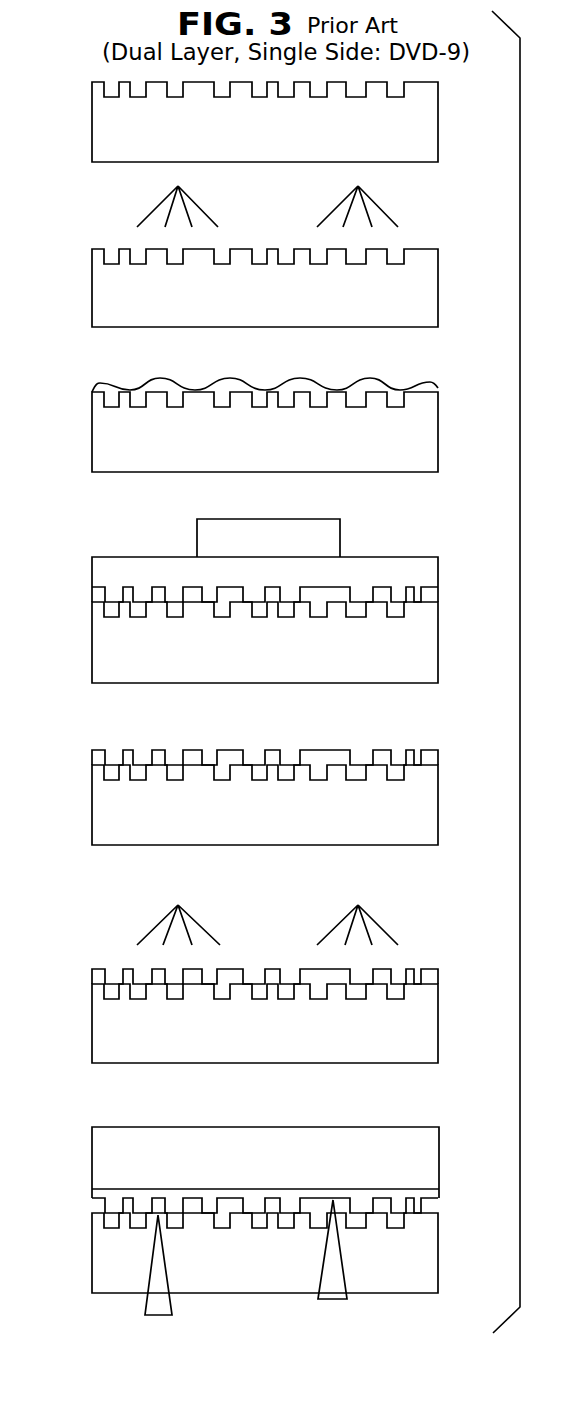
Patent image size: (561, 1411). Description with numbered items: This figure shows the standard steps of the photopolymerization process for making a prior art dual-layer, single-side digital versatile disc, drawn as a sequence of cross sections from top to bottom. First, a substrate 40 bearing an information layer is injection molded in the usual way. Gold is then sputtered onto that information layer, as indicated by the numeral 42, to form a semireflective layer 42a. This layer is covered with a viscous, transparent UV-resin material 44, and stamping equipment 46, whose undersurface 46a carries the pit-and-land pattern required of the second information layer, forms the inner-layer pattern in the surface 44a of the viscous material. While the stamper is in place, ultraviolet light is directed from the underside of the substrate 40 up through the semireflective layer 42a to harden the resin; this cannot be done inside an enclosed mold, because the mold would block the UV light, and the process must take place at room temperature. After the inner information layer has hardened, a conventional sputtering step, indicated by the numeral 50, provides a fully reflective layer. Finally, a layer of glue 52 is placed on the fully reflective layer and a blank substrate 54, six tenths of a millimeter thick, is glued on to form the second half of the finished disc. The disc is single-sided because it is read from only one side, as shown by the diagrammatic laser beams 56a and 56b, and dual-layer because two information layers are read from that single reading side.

The substrate 40 is at (103, 131).
The gold sputtering step 42 is at (328, 212).
The semireflective layer 42a is at (160, 396).
The UV-resin material 44 is at (232, 385).
The surface of the viscous material 44a is at (193, 765).
The stamping equipment 46 is at (359, 550).
The undersurface of stamping equipment 46a is at (160, 588).
The sputtering step 50 is at (335, 925).
The layer of glue 52 is at (115, 1200).
The blank substrate 54 is at (112, 1135).
The laser beam 56a is at (163, 1307).
The laser beam 56b is at (342, 1293).